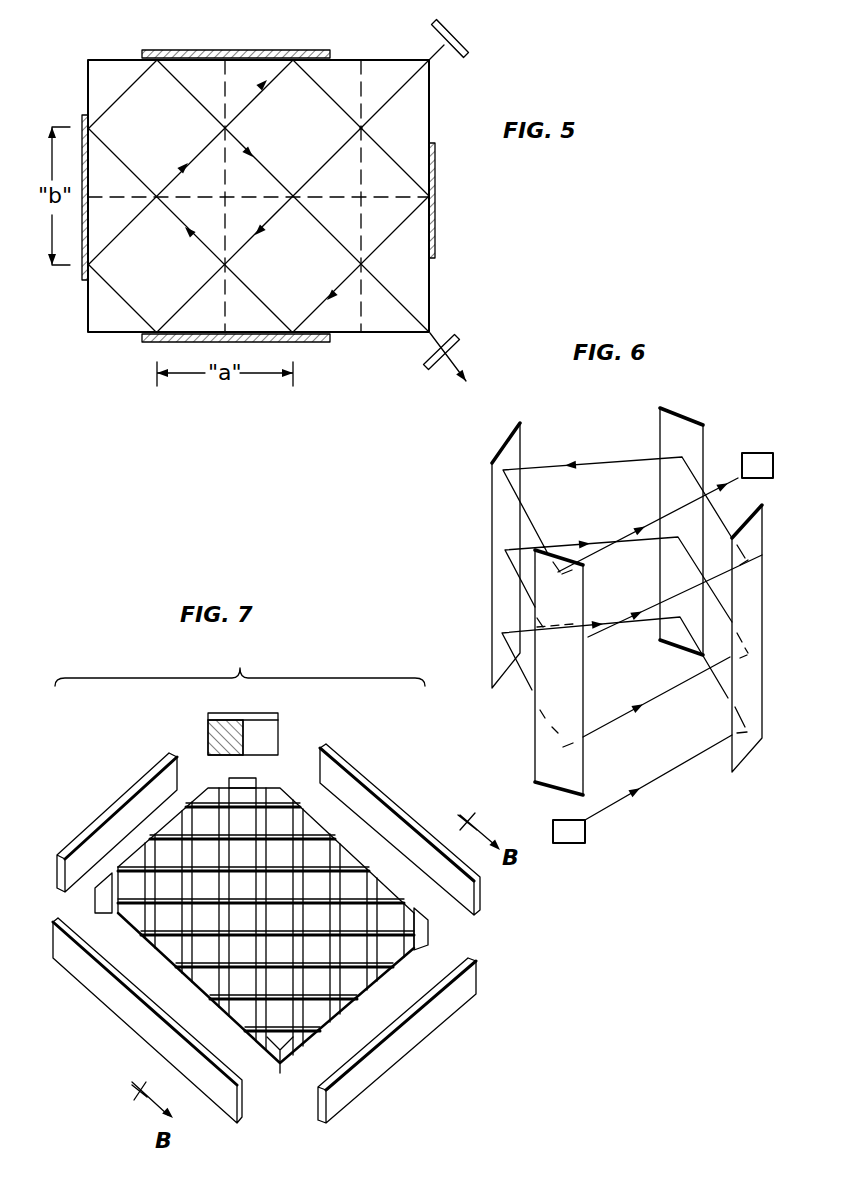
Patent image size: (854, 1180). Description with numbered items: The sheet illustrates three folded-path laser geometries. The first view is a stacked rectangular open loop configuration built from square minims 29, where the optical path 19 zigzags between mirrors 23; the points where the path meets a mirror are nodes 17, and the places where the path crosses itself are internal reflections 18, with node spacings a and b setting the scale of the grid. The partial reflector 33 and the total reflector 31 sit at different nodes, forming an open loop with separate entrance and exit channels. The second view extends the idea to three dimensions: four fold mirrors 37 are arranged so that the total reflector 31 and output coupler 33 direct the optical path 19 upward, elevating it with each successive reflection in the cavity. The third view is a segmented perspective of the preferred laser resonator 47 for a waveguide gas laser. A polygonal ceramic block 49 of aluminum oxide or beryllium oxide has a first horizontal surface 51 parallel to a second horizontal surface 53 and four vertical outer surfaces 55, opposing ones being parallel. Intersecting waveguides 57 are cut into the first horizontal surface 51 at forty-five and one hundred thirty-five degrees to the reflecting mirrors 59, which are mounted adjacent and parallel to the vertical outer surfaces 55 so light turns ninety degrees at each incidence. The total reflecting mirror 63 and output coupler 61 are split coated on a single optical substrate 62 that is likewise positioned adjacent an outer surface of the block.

In FIG. 5, the nodes 17 is at (294, 60).
In FIG. 5, the internal reflections 18 is at (372, 128).
In FIG. 6, the optical path 19 is at (658, 782).
In FIG. 5, the mirrors 23 is at (235, 57).
In FIG. 5, the square minims 29 is at (107, 317).
In FIG. 5, the total reflector 31 is at (467, 54).
In FIG. 6, the total reflector 31 is at (585, 843).
In FIG. 5, the partial reflector (output coupler) 33 is at (455, 335).
In FIG. 6, the partial reflector (output coupler) 33 is at (752, 452).
In FIG. 6, the fold mirrors 37 is at (498, 447).
In FIG. 7, the laser resonator 47 is at (240, 716).
In FIG. 7, the polygonal ceramic block 49 is at (427, 947).
In FIG. 7, the first horizontal surface 51 is at (387, 893).
In FIG. 7, the second horizontal surface 53 is at (333, 1027).
In FIG. 7, the vertical outer surfaces 55 is at (265, 1075).
In FIG. 7, the intersecting waveguides 57 is at (263, 788).
In FIG. 7, the reflecting mirrors 59 is at (95, 822).
In FIG. 7, the output coupler 61 is at (207, 727).
In FIG. 7, the single optical substrate 62 is at (181, 738).
In FIG. 7, the total reflecting mirror 63 is at (276, 732).